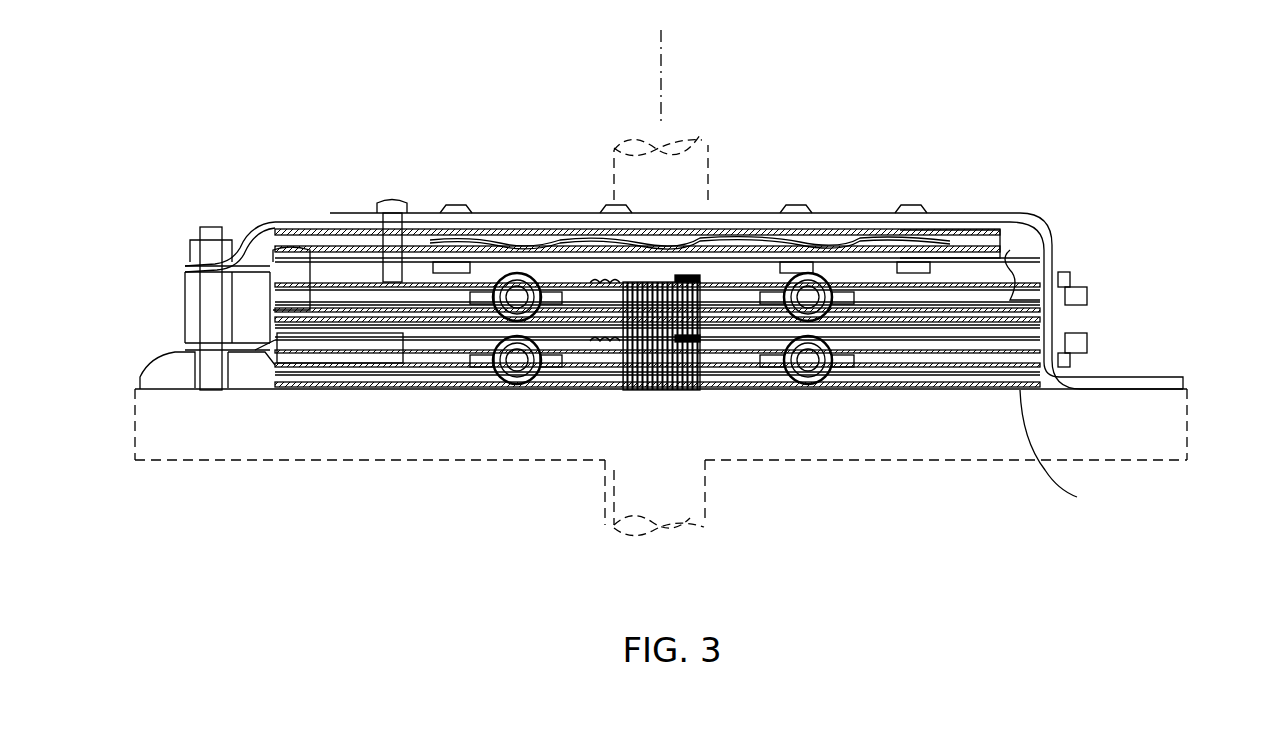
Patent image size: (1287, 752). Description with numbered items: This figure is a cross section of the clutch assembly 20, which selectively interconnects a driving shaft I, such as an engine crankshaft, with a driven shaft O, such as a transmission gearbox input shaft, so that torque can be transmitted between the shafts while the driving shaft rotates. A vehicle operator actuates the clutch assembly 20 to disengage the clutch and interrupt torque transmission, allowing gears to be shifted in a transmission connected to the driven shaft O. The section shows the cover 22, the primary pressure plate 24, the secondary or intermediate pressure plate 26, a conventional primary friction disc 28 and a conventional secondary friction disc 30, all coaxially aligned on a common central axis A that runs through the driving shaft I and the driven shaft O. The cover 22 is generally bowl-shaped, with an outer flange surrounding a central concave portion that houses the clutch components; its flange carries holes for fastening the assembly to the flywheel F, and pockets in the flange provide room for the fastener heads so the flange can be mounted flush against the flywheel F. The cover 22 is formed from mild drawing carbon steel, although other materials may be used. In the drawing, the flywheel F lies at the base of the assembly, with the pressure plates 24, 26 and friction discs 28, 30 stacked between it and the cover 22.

The clutch assembly 20 is at (1050, 152).
The cover 22 is at (1147, 376).
The primary pressure plate 24 is at (1037, 287).
The secondary or intermediate pressure plate 26 is at (1052, 331).
The primary friction disc 28 is at (943, 390).
The secondary friction disc 30 is at (1063, 451).
The central axis A is at (661, 53).
The driven shaft O is at (708, 175).
The driving shaft I is at (708, 510).
The flywheel F is at (1133, 463).